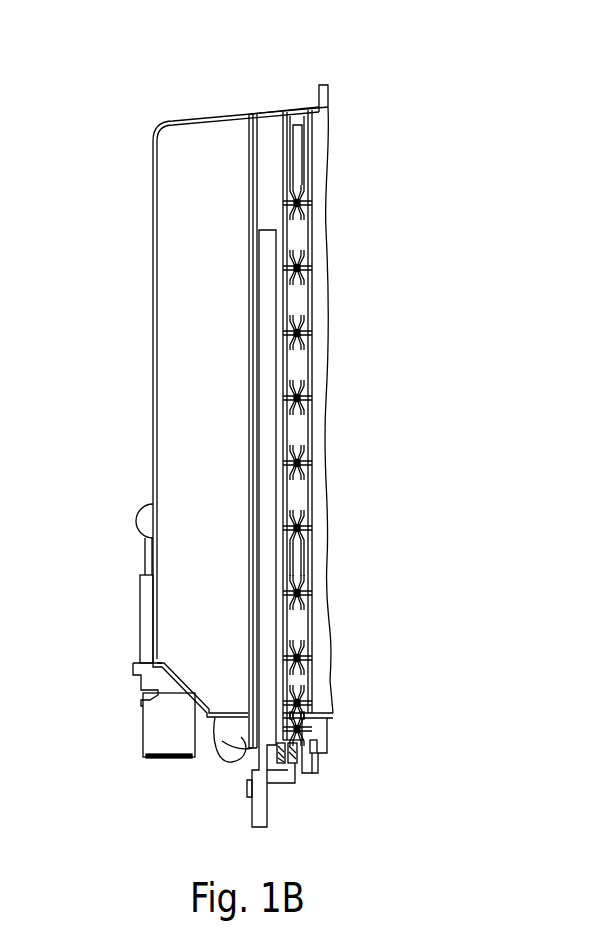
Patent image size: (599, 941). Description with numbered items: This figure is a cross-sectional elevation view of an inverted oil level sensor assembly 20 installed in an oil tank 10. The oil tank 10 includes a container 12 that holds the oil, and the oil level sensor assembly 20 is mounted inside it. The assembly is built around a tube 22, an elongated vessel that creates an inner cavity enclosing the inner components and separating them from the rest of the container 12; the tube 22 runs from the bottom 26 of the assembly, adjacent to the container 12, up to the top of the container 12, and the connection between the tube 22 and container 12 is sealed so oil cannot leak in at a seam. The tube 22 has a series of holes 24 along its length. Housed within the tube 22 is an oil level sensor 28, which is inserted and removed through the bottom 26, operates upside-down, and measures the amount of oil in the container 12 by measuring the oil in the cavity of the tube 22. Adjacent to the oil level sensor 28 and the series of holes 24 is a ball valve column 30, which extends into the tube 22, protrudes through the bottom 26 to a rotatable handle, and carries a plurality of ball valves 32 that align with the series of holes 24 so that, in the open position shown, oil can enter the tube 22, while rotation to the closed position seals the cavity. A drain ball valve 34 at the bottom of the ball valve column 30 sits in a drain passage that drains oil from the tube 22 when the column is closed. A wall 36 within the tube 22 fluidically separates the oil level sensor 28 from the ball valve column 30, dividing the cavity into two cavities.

The oil tank 10 is at (399, 103).
The container 12 is at (190, 287).
The oil level sensor assembly 20 is at (268, 106).
The tube 22 is at (250, 203).
The series of holes 24 is at (310, 203).
The bottom 26 is at (304, 789).
The oil level sensor 28 is at (260, 685).
The ball valve column 30 is at (302, 368).
The plurality of ball valves 32 is at (300, 278).
The drain ball valve 34 is at (302, 727).
The wall 36 is at (305, 573).